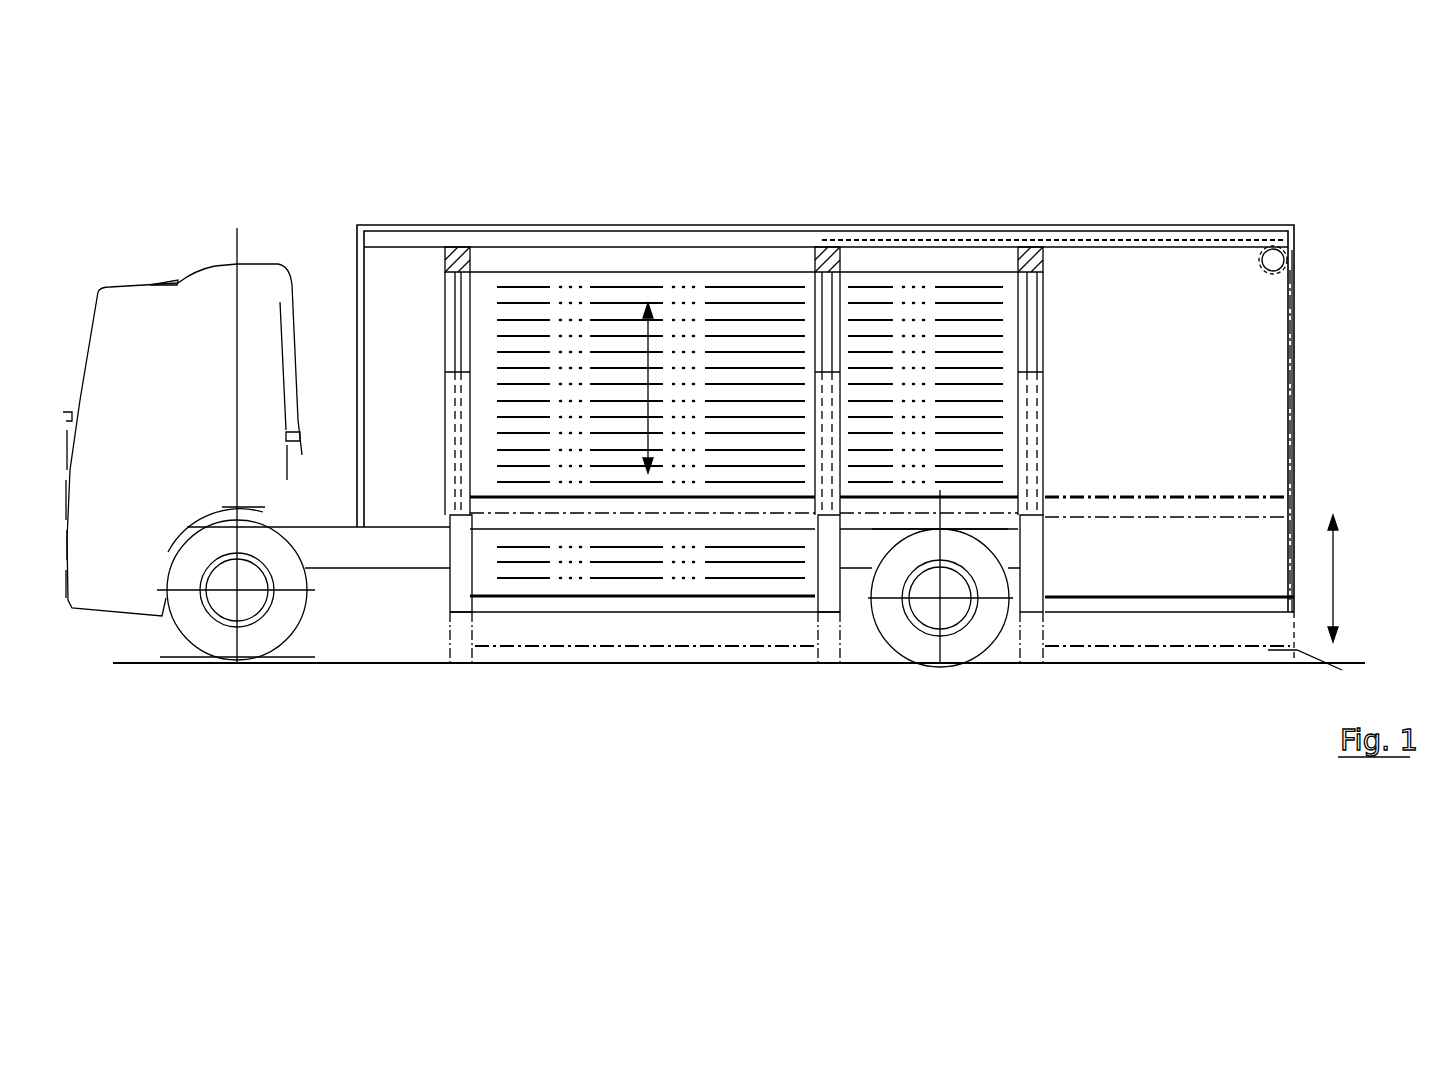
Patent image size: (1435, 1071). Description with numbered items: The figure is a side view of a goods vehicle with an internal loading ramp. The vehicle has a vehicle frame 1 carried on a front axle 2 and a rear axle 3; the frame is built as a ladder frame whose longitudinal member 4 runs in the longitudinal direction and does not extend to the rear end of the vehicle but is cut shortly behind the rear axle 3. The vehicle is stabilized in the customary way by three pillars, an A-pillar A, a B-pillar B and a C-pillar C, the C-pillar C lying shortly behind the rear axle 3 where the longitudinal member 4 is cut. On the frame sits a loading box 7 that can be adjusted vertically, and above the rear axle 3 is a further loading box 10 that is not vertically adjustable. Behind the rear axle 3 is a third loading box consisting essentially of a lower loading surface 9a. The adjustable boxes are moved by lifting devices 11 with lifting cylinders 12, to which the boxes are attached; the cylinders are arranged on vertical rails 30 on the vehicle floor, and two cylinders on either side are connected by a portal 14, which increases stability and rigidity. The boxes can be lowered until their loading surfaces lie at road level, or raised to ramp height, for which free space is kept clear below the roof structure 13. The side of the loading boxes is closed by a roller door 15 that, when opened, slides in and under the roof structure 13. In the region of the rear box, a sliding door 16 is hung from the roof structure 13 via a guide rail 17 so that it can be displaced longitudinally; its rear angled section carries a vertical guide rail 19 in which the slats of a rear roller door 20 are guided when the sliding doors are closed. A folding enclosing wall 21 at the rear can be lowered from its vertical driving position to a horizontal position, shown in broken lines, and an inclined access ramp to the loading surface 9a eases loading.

The vehicle frame 1 is at (360, 568).
The front axle 2 is at (237, 612).
The rear axle 3 is at (942, 613).
The longitudinal member 4 is at (418, 550).
The loading box 7 is at (573, 607).
The lower loading surface 9a is at (1152, 608).
The loading box above the rear axle 10 is at (907, 502).
The lifting device 11 is at (448, 430).
The lifting cylinder 12 is at (448, 527).
The roof structure 13 is at (915, 240).
The portal 14 is at (527, 262).
The roller door 15 is at (600, 376).
The sliding door 16 is at (1210, 322).
The guide rail 17 is at (1147, 240).
The vertical guide rail 19 is at (1295, 405).
The roller door 20 is at (1295, 323).
The folding enclosing wall 21 is at (1320, 658).
The vertical rail 30 is at (818, 270).
The A-pillar A is at (467, 613).
The B-pillar B is at (827, 617).
The C-pillar C is at (1032, 617).